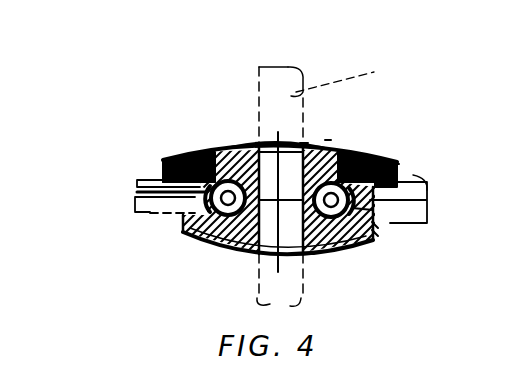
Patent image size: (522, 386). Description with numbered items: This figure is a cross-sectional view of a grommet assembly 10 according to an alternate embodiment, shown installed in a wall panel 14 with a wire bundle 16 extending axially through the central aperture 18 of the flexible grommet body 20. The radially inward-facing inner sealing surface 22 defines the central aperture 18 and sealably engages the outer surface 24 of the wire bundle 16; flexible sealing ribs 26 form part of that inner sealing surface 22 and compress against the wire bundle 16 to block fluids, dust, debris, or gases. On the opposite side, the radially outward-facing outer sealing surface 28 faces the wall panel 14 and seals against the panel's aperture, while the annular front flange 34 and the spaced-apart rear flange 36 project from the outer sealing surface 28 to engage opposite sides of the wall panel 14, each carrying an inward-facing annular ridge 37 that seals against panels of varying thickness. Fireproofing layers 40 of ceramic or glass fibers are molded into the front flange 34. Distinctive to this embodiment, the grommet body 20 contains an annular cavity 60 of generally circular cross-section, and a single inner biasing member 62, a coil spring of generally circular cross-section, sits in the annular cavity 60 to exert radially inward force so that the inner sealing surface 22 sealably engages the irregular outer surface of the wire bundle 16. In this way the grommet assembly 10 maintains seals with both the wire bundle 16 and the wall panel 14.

The grommet assembly 10 is at (446, 59).
The wall panel 14 is at (415, 180).
The wire bundle 16 is at (347, 75).
The central aperture 18 is at (306, 138).
The grommet body 20 is at (352, 156).
The inner sealing surface 22 is at (327, 140).
The outer surface of the wire bundle 24 is at (258, 110).
The sealing ribs 26 is at (320, 252).
The outer sealing surface 28 is at (373, 210).
The front flange 34 is at (395, 165).
The rear flange 36 is at (376, 233).
The annular ridge 37 is at (377, 225).
The fireproofing layers 40 is at (207, 153).
The annular cavity 60 is at (135, 190).
The inner biasing member 62 is at (163, 172).